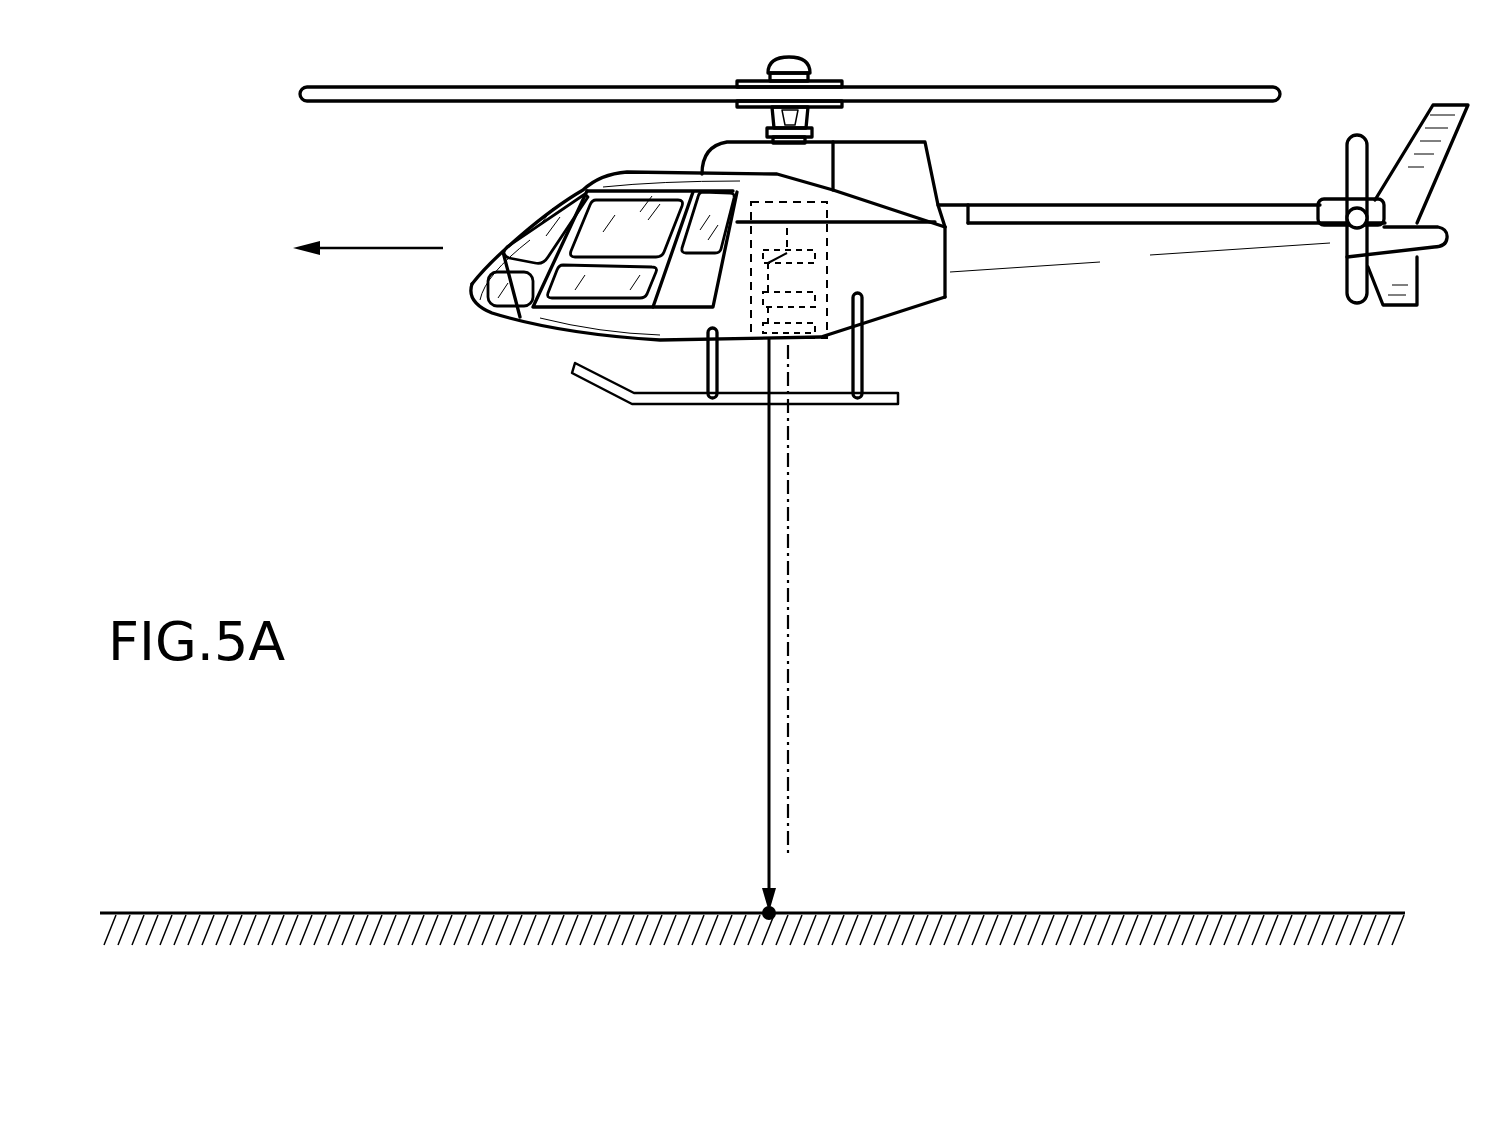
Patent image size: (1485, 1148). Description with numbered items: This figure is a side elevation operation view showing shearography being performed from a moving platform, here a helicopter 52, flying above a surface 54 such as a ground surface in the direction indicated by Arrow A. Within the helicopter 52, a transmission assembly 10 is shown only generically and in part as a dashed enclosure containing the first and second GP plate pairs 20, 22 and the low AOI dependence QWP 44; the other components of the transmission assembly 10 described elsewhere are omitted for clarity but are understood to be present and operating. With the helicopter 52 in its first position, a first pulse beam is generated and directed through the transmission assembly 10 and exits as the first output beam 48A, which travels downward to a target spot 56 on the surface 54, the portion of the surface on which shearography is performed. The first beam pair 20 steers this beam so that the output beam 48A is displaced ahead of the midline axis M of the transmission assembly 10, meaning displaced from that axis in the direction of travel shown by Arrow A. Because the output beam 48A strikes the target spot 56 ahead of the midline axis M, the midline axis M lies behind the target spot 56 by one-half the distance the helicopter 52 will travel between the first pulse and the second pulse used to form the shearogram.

The transmission assembly 10 is at (845, 237).
The first GP plate pair 20 is at (845, 258).
The second GP plate pair 22 is at (845, 305).
The low AOI dependence QWP 44 is at (800, 330).
The first output beam 48A is at (767, 603).
The helicopter 52 is at (597, 172).
The surface 54 is at (1265, 898).
The target spot 56 is at (774, 909).
The midline axis M is at (788, 650).
The Arrow A is at (368, 236).